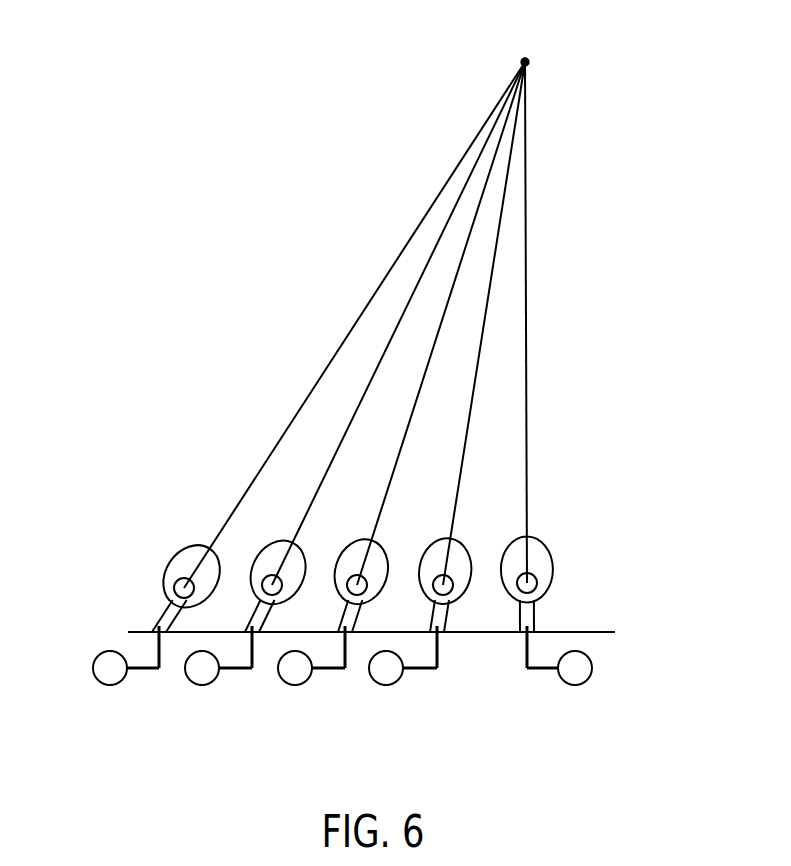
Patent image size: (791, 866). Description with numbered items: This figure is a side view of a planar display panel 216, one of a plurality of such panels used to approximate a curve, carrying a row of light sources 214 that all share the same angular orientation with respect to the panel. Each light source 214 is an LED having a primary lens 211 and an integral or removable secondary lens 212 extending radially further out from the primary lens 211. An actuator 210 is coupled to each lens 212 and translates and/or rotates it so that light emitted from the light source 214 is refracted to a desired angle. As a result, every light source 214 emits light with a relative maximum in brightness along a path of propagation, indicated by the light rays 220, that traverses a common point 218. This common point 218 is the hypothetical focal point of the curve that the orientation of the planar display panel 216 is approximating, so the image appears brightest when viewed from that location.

The actuator 210 is at (113, 686).
The primary lens 211 is at (536, 579).
The lens 212 is at (175, 553).
The light source 214 is at (140, 599).
The planar display panel 216 is at (575, 631).
The common point 218 is at (521, 61).
The light rays 220 is at (288, 428).